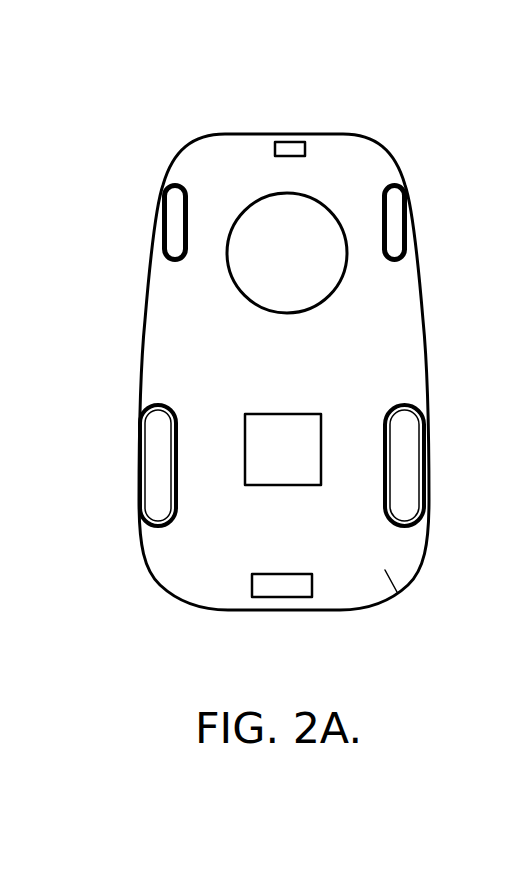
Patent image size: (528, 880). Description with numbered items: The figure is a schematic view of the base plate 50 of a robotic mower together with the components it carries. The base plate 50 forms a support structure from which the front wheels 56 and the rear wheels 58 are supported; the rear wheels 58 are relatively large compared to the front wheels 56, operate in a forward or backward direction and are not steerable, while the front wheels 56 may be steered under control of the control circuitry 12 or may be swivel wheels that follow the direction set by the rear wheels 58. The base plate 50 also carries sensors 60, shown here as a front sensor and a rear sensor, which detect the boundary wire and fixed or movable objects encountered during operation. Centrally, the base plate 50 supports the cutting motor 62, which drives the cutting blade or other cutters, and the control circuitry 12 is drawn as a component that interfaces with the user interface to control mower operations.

The control circuitry 12 is at (277, 443).
The base plate 50 is at (178, 362).
The front wheels 56 is at (171, 212).
The rear wheels 58 is at (163, 458).
The sensors 60 is at (278, 148).
The cutting motor 62 is at (284, 225).